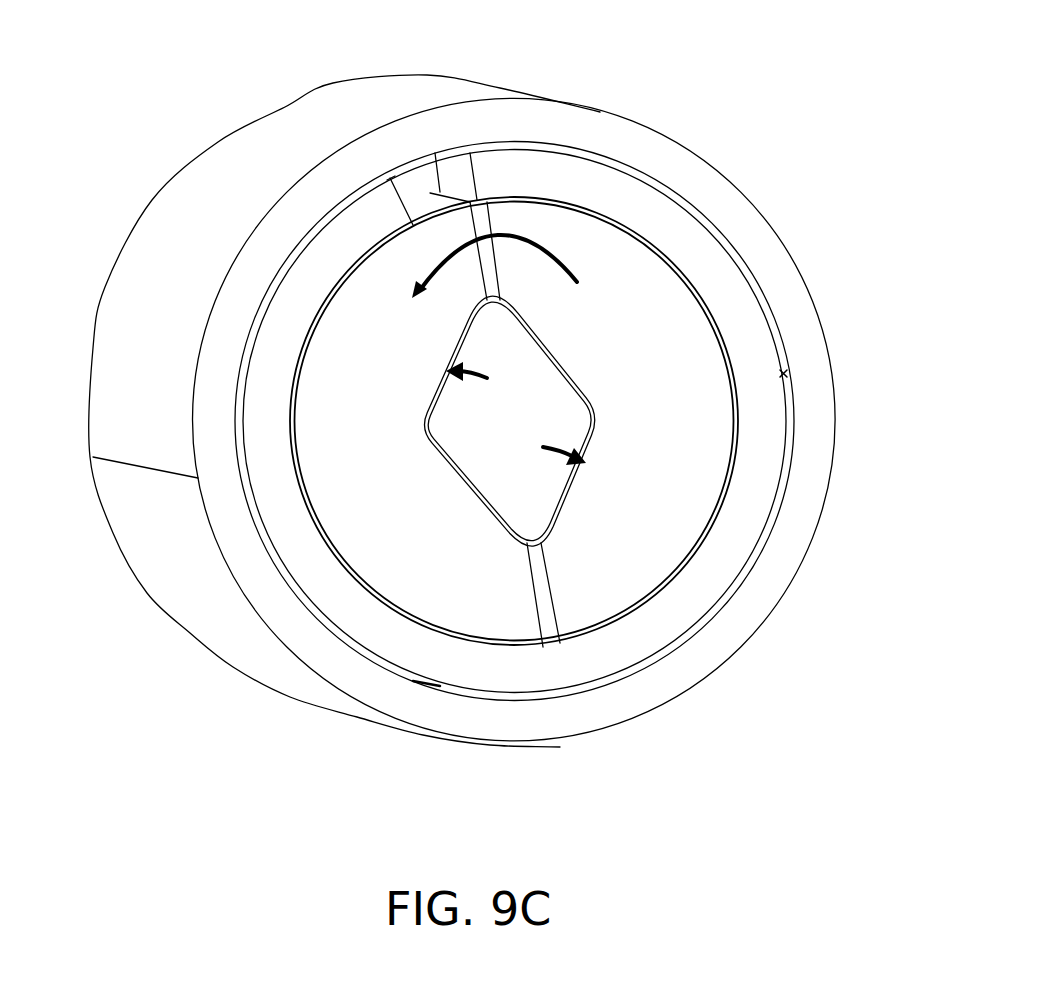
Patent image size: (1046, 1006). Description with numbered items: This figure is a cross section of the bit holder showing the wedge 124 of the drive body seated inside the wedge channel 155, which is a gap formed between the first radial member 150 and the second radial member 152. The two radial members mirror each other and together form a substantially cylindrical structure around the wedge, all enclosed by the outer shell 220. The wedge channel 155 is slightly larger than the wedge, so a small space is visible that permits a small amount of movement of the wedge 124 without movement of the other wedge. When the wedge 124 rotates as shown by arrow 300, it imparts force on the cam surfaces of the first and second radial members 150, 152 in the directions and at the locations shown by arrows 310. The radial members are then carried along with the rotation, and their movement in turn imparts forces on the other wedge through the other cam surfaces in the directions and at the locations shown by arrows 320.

The shell 220 is at (250, 138).
The first radial member 150 is at (652, 325).
The second radial member 152 is at (377, 507).
The wedge 124 is at (529, 492).
The wedge channel 155 is at (536, 548).
The arrows 320 is at (572, 344).
The arrows 310 is at (455, 366).
The arrow 300 is at (533, 247).